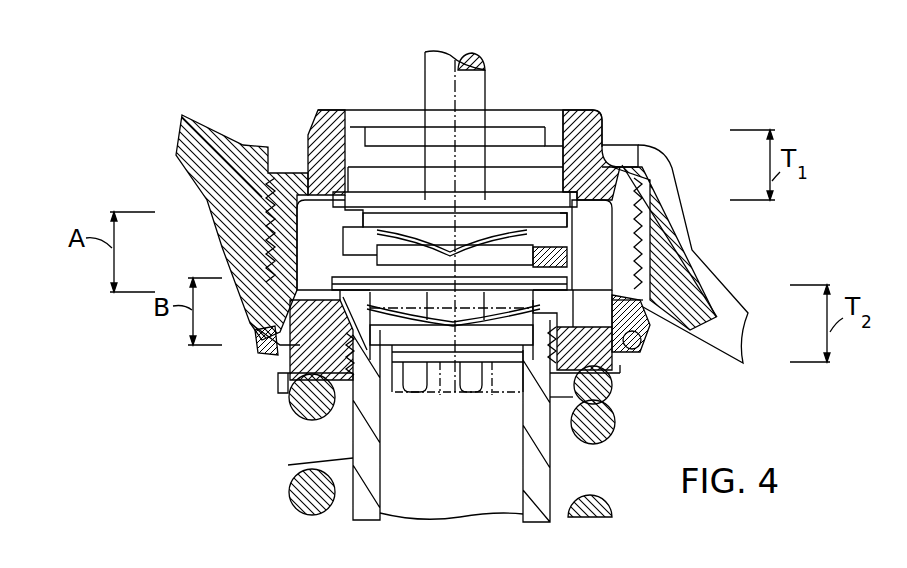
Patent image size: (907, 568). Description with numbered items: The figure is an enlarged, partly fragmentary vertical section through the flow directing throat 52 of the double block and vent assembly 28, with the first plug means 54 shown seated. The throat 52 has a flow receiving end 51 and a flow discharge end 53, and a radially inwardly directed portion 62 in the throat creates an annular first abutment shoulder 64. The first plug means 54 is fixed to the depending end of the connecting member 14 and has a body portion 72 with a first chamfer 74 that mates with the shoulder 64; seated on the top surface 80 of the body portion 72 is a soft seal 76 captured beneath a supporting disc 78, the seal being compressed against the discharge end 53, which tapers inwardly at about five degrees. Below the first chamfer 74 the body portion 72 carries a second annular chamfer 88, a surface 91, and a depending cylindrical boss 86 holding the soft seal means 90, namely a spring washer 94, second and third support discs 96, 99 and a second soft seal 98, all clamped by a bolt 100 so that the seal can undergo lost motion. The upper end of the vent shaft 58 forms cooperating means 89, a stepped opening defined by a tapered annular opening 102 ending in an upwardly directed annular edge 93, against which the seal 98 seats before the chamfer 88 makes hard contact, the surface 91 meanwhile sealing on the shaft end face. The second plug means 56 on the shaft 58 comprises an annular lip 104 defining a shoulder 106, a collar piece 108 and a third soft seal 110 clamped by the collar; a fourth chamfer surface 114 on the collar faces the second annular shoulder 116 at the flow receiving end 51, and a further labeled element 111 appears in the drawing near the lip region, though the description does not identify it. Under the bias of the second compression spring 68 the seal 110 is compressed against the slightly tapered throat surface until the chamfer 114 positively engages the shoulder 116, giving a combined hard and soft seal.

The connecting member 14 is at (432, 80).
The double block and vent assembly 28 is at (665, 188).
The flow receiving end 51 is at (274, 383).
The flow directing throat 52 is at (270, 177).
The flow discharge end 53 is at (553, 101).
The first plug means 54 is at (530, 118).
The second plug means 56 is at (637, 389).
The vent shaft 58 is at (547, 468).
The radially inwardly directed portion 62 is at (320, 130).
The first abutment shoulder 64 is at (556, 186).
The second compression spring 68 is at (289, 485).
The body portion 72 is at (498, 180).
The first chamfer 74 is at (555, 220).
The soft seal 76 is at (598, 130).
The supporting disc 78 is at (378, 133).
The top surface 80 is at (399, 174).
The cylindrical boss 86 is at (458, 204).
The second annular chamfer 88 is at (344, 242).
The cooperating means 89 is at (387, 360).
The soft seal means 90 is at (490, 350).
The surface underlying the first chamfer 91 is at (377, 232).
The upwardly directed annular edge 93 is at (572, 456).
The spring washer 94 is at (622, 241).
The second support disc 96 is at (505, 242).
The second soft seal 98 is at (388, 262).
The third support disc 99 is at (600, 280).
The bolt 100 is at (453, 328).
The tapered annular opening 102 is at (262, 356).
The annular lip 104 is at (660, 274).
The shoulder 106 is at (262, 268).
The collar piece 108 is at (304, 418).
The third soft seal 110 is at (634, 349).
The surface 111 is at (262, 325).
The fourth chamfer surface 114 is at (641, 376).
The second annular shoulder 116 is at (634, 366).